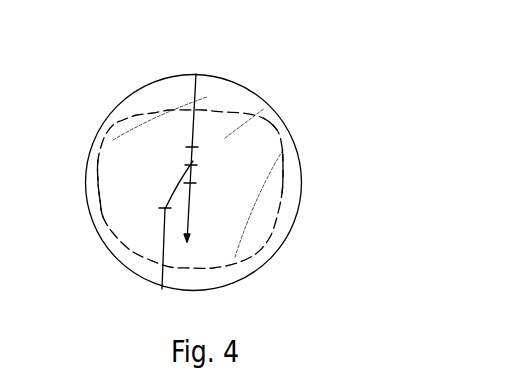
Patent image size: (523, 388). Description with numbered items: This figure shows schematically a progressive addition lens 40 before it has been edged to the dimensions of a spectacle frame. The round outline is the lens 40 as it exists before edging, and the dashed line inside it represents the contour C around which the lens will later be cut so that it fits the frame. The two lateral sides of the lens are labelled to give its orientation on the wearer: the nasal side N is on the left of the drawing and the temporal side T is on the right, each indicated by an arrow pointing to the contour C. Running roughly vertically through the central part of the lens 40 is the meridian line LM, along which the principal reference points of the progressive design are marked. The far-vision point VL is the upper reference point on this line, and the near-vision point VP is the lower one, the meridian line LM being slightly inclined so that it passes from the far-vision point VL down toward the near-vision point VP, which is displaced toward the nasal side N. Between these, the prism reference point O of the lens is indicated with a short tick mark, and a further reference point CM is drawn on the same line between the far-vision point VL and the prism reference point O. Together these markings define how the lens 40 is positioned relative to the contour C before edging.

The contact lens 40 is at (283, 108).
The far-vision point VL is at (201, 158).
The center of lens mass / centroid CM is at (203, 165).
The prism reference point O is at (198, 183).
The meridian line LM is at (168, 185).
The near-vision point VP is at (152, 244).
The nasal side N is at (100, 192).
The temporal side T is at (282, 200).
The contour C is at (284, 150).